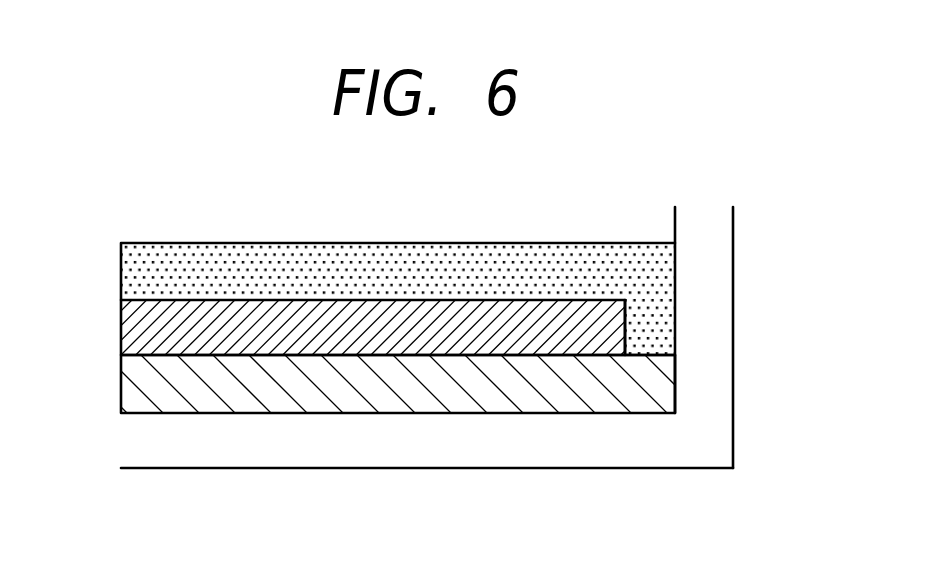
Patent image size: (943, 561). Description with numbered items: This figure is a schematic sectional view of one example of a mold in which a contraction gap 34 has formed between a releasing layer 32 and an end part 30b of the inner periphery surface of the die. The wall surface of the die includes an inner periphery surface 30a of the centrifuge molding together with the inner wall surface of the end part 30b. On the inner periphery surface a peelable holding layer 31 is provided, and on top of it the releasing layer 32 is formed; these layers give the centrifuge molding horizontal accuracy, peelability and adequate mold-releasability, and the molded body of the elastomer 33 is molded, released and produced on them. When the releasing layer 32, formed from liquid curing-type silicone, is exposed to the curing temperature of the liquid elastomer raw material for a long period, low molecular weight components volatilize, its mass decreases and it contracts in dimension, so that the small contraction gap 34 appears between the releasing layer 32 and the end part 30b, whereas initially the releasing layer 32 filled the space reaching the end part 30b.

The inner periphery surface 30a is at (468, 413).
The end part of inner periphery surface 30b is at (673, 270).
The peelable holding layer 31 is at (128, 390).
The releasing layer 32 is at (130, 327).
The molded body of the elastomer 33 is at (208, 248).
The contraction gap 34 is at (653, 335).